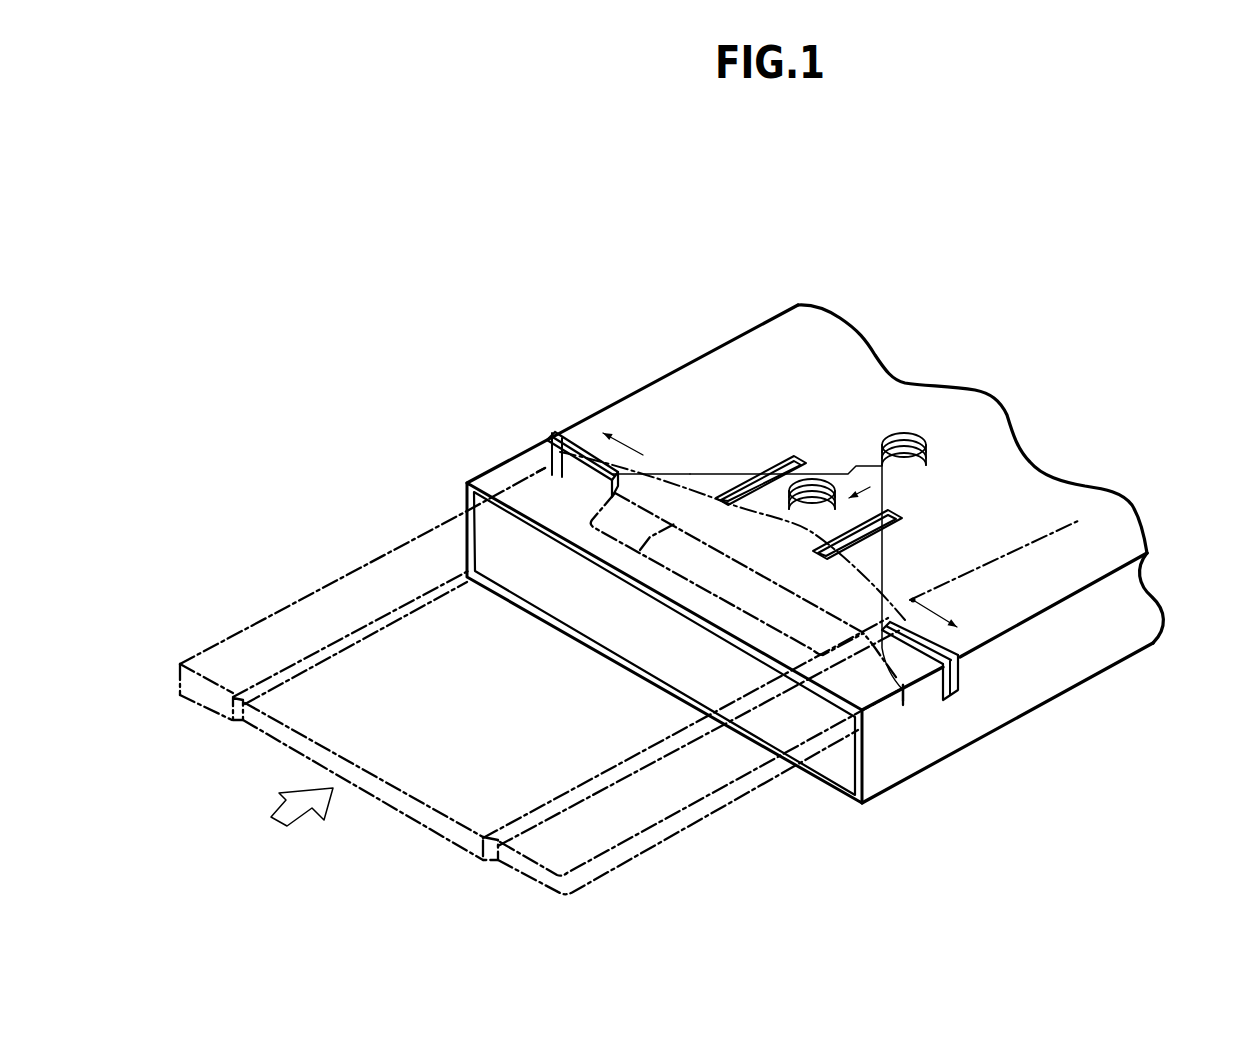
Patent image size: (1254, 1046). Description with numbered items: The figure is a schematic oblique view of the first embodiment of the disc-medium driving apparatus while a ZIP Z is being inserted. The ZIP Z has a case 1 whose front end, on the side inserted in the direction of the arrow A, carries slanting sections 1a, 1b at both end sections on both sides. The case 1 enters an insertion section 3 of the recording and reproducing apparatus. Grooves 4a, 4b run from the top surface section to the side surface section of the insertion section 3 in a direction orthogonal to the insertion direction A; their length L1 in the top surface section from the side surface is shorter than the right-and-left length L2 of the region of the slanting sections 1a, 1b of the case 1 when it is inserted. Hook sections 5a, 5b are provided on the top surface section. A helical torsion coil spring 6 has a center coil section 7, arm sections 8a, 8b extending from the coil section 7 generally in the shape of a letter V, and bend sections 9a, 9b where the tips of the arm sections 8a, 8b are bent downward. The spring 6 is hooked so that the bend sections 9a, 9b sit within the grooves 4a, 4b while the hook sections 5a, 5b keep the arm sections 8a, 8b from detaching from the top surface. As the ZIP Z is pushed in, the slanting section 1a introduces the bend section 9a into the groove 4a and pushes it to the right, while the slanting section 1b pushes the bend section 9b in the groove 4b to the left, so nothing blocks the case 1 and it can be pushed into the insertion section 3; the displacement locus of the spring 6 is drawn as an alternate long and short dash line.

The case 1 is at (283, 612).
The slanting section 1a is at (905, 665).
The slanting section 1b is at (550, 475).
The insertion section 3 is at (1152, 533).
The groove 4a is at (960, 683).
The groove 4b is at (560, 438).
The hook section 5a is at (905, 515).
The hook section 5b is at (796, 462).
The helical torsion coil spring 6 is at (720, 470).
The coil section 7 is at (922, 436).
The arm section 8a is at (884, 557).
The arm section 8b is at (683, 472).
The bend section 9a is at (916, 661).
The bend section 9b is at (562, 453).
The arrow indicating ZIP insertion direction A is at (282, 824).
The ZIP Z is at (713, 822).
The length of the grooves in the top surface section L1 is at (1062, 597).
The length in the right and left direction of the slanting section region L2 is at (830, 733).